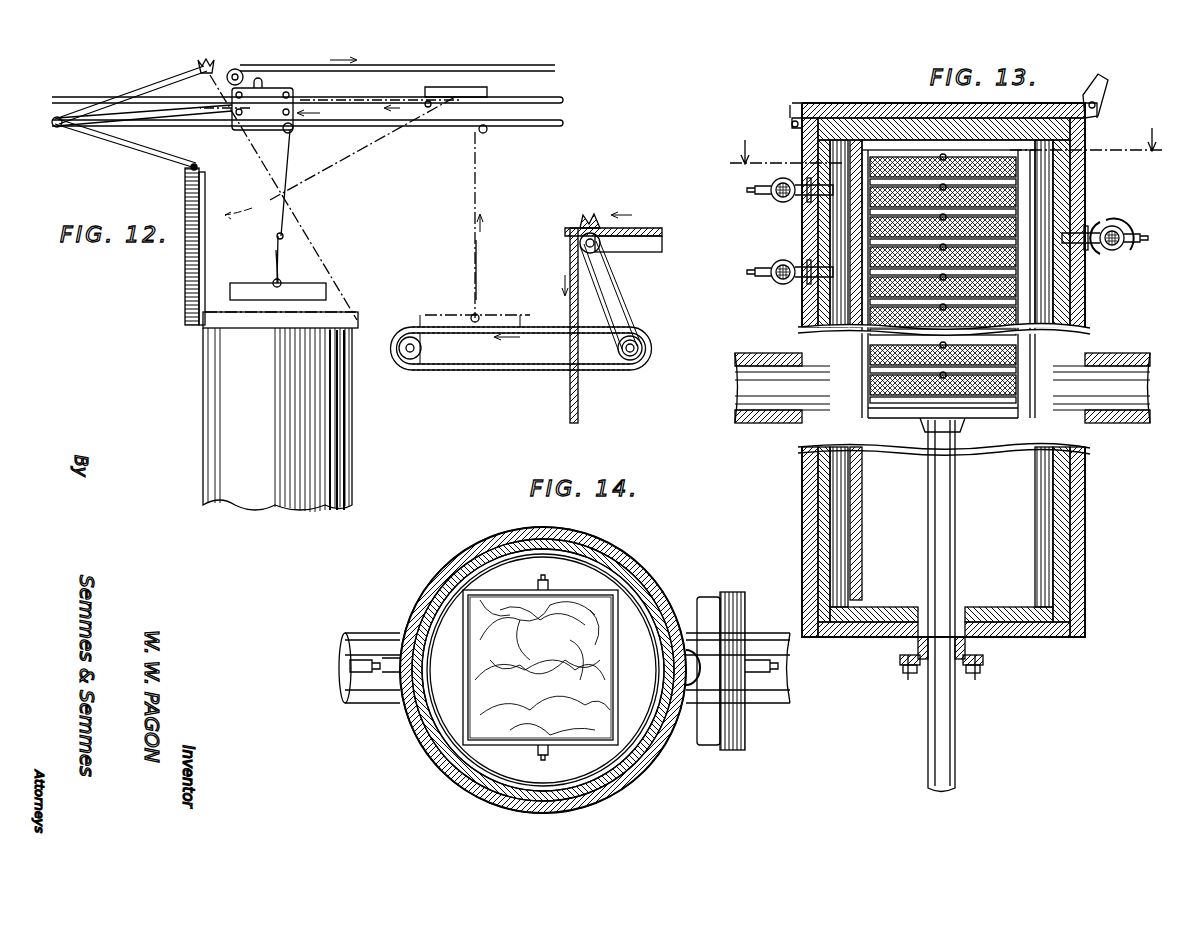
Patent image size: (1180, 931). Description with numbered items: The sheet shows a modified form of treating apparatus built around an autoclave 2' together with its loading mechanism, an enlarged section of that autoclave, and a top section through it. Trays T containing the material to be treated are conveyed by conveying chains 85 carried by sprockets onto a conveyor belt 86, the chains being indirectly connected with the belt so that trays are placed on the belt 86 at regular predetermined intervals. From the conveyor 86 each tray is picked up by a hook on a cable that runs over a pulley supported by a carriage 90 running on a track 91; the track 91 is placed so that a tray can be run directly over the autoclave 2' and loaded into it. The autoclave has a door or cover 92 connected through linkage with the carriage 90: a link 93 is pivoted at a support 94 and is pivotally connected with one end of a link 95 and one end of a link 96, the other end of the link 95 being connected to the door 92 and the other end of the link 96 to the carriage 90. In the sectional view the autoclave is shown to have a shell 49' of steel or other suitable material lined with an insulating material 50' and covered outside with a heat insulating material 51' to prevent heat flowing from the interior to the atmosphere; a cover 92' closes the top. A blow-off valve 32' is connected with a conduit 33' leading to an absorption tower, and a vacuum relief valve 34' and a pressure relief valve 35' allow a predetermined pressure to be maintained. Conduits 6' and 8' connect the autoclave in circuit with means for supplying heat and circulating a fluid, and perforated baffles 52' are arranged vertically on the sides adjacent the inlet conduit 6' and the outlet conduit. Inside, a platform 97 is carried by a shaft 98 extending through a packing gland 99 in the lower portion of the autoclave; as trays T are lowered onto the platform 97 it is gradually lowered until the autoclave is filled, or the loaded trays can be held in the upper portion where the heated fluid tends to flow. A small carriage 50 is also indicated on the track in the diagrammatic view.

In FIG. 12, the autoclave 2' is at (294, 412).
In FIG. 13, the autoclave 2' is at (970, 370).
In FIG. 13, the inlet conduit 6' is at (774, 401).
In FIG. 14, the inlet conduit 6' is at (369, 685).
In FIG. 13, the conduit 8' is at (1102, 376).
In FIG. 14, the conduit 8' is at (747, 676).
In FIG. 13, the blow-off valve 32' is at (1128, 250).
In FIG. 14, the blow-off valve 32' is at (762, 655).
In FIG. 13, the conduit 33' is at (1107, 220).
In FIG. 14, the conduit 33' is at (734, 671).
In FIG. 13, the vacuum relief valve 34' is at (775, 282).
In FIG. 13, the pressure relief valve 35' is at (783, 201).
In FIG. 14, the pressure relief valve 35' is at (422, 635).
In FIG. 13, the shell 49' is at (902, 373).
In FIG. 14, the shell 49' is at (543, 682).
In FIG. 13, the insulating material 50' is at (906, 370).
In FIG. 14, the insulating material 50' is at (543, 685).
In FIG. 13, the heat insulating material 51' is at (970, 370).
In FIG. 14, the heat insulating material 51' is at (543, 679).
In FIG. 13, the perforated baffles 52' is at (812, 370).
In FIG. 14, the perforated baffles 52' is at (498, 667).
In FIG. 12, the carriage 50 is at (456, 125).
In FIG. 12, the conveying chains 85 is at (650, 228).
In FIG. 12, the conveyor belt 86 is at (536, 327).
In FIG. 12, the carriage 90 is at (258, 118).
In FIG. 12, the track 91 is at (552, 98).
In FIG. 12, the door 92 is at (177, 246).
In FIG. 13, the cover 92' is at (886, 94).
In FIG. 12, the link 93 is at (138, 88).
In FIG. 12, the support 94 is at (212, 68).
In FIG. 12, the link 95 is at (120, 138).
In FIG. 13, the link 95 is at (1100, 90).
In FIG. 12, the link 96 is at (170, 109).
In FIG. 13, the platform 97 is at (996, 430).
In FIG. 13, the shaft 98 is at (957, 548).
In FIG. 13, the packing gland 99 is at (965, 655).
In FIG. 13, the trays T is at (870, 250).
In FIG. 14, the trays T is at (658, 750).